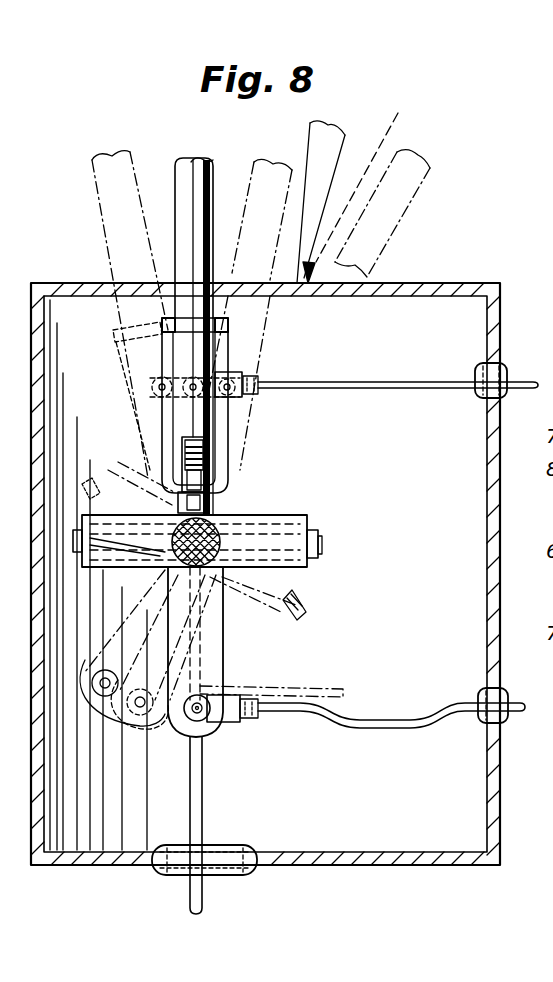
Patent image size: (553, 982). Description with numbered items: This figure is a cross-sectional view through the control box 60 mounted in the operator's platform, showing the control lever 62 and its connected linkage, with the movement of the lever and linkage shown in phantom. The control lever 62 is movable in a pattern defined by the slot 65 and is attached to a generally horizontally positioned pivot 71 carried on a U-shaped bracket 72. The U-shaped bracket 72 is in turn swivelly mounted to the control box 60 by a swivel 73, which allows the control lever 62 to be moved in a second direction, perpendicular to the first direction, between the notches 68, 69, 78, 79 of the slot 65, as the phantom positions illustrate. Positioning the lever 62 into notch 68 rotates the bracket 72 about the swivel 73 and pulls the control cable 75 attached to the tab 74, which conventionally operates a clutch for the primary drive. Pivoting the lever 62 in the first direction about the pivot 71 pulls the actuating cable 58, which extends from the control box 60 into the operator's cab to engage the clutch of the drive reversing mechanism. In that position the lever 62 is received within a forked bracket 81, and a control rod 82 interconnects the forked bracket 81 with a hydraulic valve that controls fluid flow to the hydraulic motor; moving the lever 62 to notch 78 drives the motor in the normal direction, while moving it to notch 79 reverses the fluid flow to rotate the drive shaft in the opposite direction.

The cable 58 is at (204, 770).
The control box 60 is at (430, 283).
The control lever 62 is at (107, 228).
The slot 65 is at (366, 189).
The notch 68 is at (360, 297).
The notch 69 is at (295, 282).
The pivot 71 is at (319, 547).
The U-shaped bracket 72 is at (292, 517).
The swivel 73 is at (212, 522).
The tab 74 is at (223, 647).
The control cable 75 is at (378, 708).
The notch 78 is at (268, 330).
The notch 79 is at (125, 310).
The forked bracket 81 is at (228, 418).
The control rod 82 is at (364, 388).